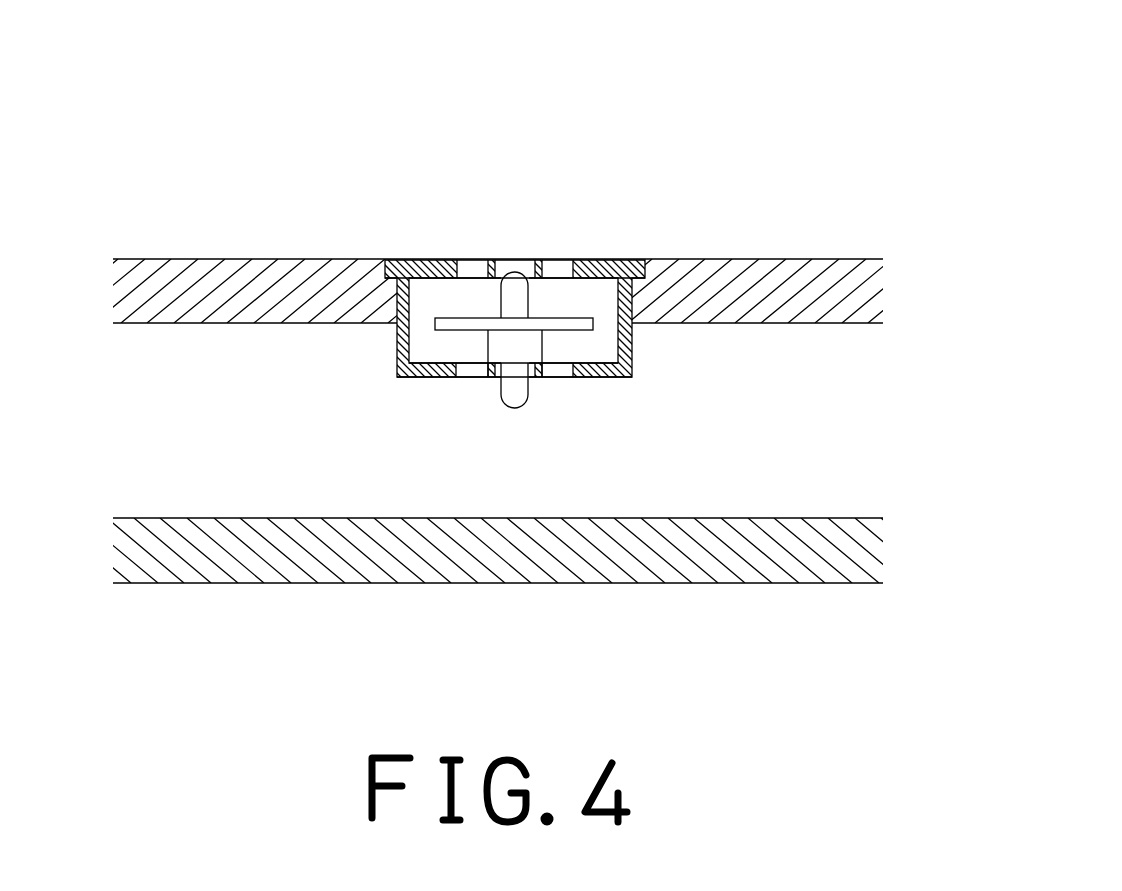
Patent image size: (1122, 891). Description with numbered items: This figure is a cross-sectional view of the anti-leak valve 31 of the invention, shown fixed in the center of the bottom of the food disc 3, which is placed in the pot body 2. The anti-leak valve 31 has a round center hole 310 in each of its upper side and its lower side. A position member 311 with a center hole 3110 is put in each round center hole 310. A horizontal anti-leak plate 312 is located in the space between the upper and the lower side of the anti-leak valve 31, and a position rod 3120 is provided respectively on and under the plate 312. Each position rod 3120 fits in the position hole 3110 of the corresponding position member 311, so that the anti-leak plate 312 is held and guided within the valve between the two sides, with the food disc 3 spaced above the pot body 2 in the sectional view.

The pot body 2 is at (320, 550).
The food disc 3 is at (267, 273).
The anti-leak valve 31 is at (428, 259).
The round center hole 310 is at (475, 268).
The position member 311 is at (537, 270).
The center hole 3110 is at (513, 262).
The horizontal anti-leak plate 312 is at (585, 323).
The position rod 3120 is at (520, 302).